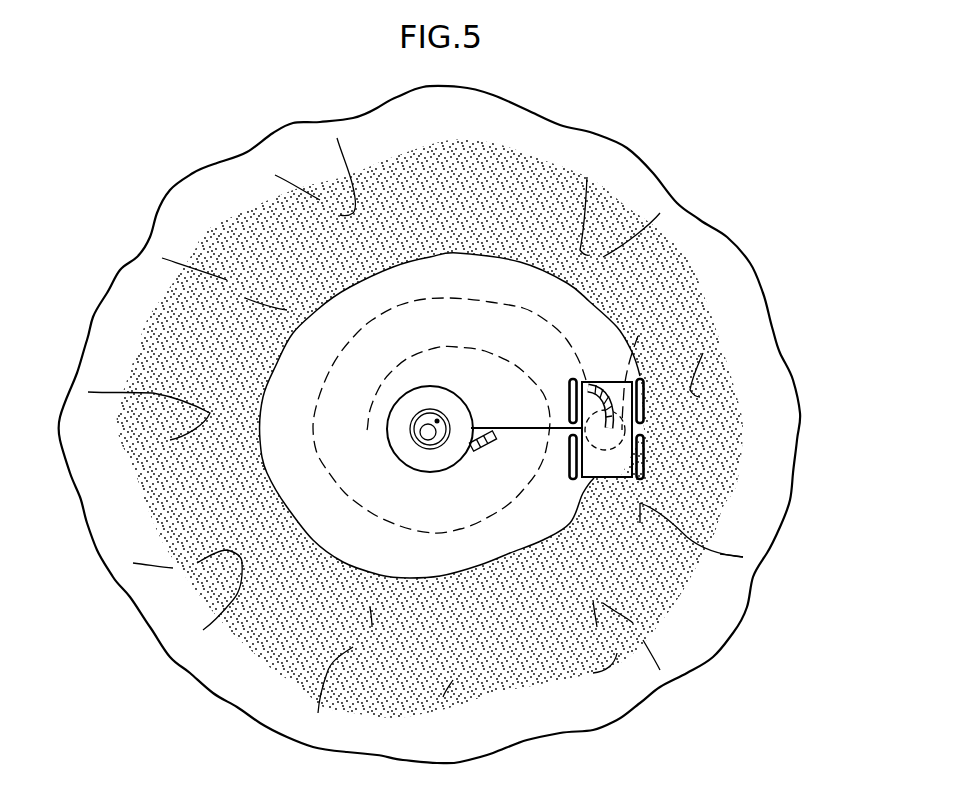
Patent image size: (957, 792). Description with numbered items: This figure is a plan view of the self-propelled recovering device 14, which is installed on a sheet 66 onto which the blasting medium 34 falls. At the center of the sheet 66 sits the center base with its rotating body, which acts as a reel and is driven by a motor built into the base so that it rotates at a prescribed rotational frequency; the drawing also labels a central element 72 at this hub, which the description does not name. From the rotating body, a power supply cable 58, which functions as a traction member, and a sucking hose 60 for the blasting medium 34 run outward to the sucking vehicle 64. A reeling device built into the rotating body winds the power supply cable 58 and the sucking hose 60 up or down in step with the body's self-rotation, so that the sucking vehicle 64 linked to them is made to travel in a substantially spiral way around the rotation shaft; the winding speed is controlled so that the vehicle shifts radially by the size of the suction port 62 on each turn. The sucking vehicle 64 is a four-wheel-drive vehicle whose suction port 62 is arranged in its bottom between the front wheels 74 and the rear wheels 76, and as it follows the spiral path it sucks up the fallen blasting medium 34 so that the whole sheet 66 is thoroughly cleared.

The self-propelled recovering device 14 is at (690, 166).
The blasting medium 34 is at (690, 428).
The power supply cable 58 is at (438, 421).
The sucking hose 60 is at (597, 387).
The suction port 62 is at (641, 381).
The sucking vehicle 64 is at (607, 480).
The sheet 66 is at (690, 233).
The central hub 72 is at (414, 438).
The front wheels 74 is at (572, 458).
The rear wheels 76 is at (567, 393).